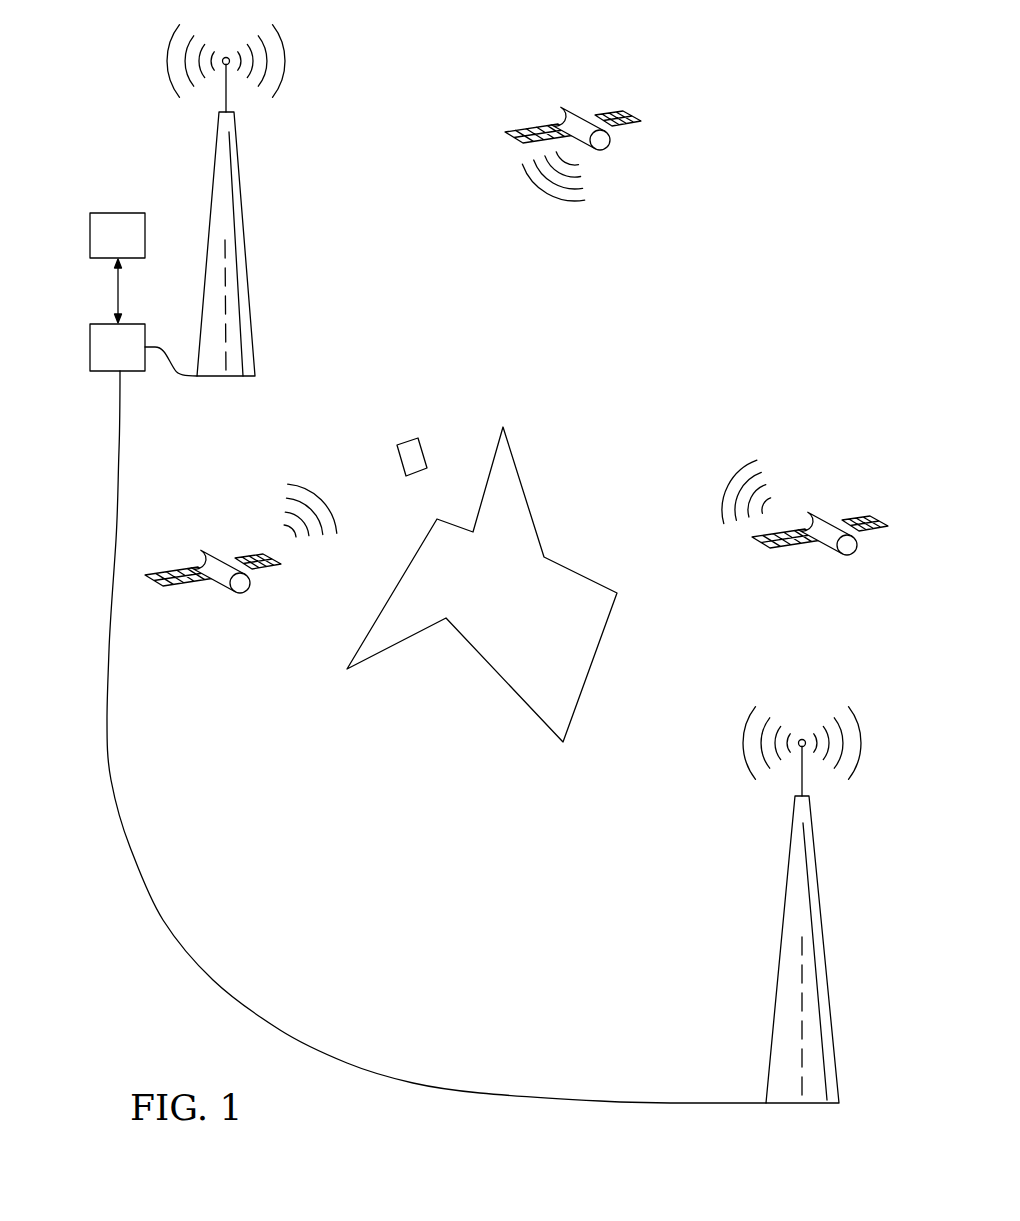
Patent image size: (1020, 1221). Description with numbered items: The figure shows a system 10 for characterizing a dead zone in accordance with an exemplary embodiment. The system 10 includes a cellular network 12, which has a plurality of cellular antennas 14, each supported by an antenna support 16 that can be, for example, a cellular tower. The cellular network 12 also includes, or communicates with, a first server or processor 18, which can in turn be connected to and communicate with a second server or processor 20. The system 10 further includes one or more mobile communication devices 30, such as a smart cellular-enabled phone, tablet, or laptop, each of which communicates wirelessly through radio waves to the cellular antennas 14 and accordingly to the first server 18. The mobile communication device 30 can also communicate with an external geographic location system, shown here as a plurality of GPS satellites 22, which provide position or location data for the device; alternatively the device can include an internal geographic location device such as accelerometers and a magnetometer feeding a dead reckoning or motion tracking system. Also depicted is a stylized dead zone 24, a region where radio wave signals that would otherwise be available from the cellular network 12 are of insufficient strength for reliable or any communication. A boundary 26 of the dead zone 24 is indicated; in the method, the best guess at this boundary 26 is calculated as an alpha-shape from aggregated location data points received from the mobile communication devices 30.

The system 10 is at (762, 142).
The cellular network 12 is at (153, 128).
The cellular antenna 14 is at (227, 92).
The antenna support 16 is at (248, 278).
The first server or processor 18 is at (103, 357).
The second server or processor 20 is at (112, 223).
The GPS satellite 22 is at (611, 145).
The dead zone 24 is at (506, 602).
The boundary 26 is at (593, 660).
The mobile communication device 30 is at (424, 449).